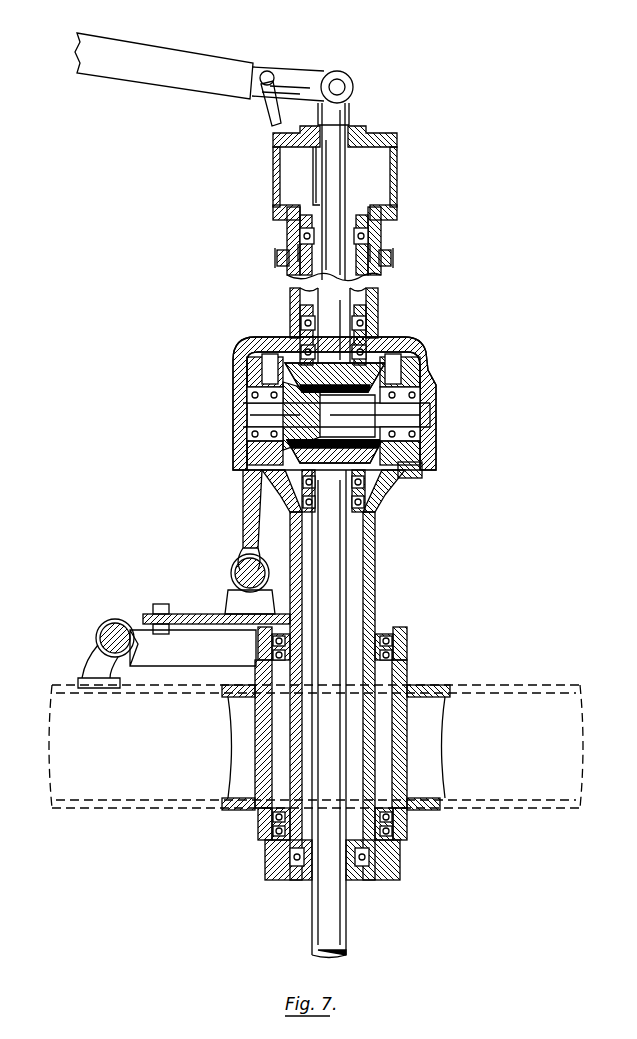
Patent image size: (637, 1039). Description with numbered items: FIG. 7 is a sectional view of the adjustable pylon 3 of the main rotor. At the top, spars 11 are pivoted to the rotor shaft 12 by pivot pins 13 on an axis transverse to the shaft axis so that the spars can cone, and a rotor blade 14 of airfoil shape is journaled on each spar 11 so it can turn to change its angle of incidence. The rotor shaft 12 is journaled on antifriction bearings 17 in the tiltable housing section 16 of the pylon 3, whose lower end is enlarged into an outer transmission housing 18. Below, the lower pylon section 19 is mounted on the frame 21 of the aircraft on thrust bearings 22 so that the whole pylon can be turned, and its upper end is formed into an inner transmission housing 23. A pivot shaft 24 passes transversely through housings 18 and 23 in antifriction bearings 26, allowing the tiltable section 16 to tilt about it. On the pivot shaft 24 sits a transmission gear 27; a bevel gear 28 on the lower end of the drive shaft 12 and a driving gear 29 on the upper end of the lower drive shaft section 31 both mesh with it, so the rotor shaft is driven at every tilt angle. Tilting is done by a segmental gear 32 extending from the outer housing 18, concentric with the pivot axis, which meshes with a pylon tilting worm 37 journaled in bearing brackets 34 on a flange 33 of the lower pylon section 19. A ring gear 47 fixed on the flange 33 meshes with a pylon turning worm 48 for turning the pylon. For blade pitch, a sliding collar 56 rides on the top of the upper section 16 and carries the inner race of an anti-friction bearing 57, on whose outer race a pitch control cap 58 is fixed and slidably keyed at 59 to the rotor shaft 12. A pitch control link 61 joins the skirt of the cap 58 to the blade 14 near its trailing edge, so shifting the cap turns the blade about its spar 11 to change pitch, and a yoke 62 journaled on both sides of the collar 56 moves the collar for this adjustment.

The pylon 3 is at (416, 313).
The spar 11 is at (292, 78).
The rotor shaft 12 is at (350, 112).
The pivot pin 13 is at (345, 85).
The rotor blade 14 is at (200, 65).
The tiltable housing section 16 is at (380, 300).
The antifriction bearing 17 is at (382, 231).
The outer transmission housing 18 is at (428, 355).
The lower pylon section 19 is at (378, 545).
The frame 21 is at (428, 686).
The thrust bearing 22 is at (408, 642).
The inner transmission housing 23 is at (424, 470).
The pivot shaft 24 is at (436, 405).
The antifriction bearing 26 is at (247, 392).
The transmission gear 27 is at (243, 415).
The bevel gear 28 is at (372, 365).
The driving gear 29 is at (380, 470).
The lower drive shaft section 31 is at (348, 572).
The segmental gear 32 is at (243, 511).
The flange 33 is at (183, 612).
The bearing bracket 34 is at (228, 598).
The pylon tilting worm 37 is at (231, 573).
The ring gear 47 is at (200, 656).
The pylon turning worm 48 is at (103, 630).
The sliding collar 56 is at (383, 245).
The anti-friction bearing 57 is at (383, 217).
The pitch control cap 58 is at (398, 182).
The key 59 is at (313, 165).
The pitch control link 61 is at (270, 115).
The yoke 62 is at (277, 259).